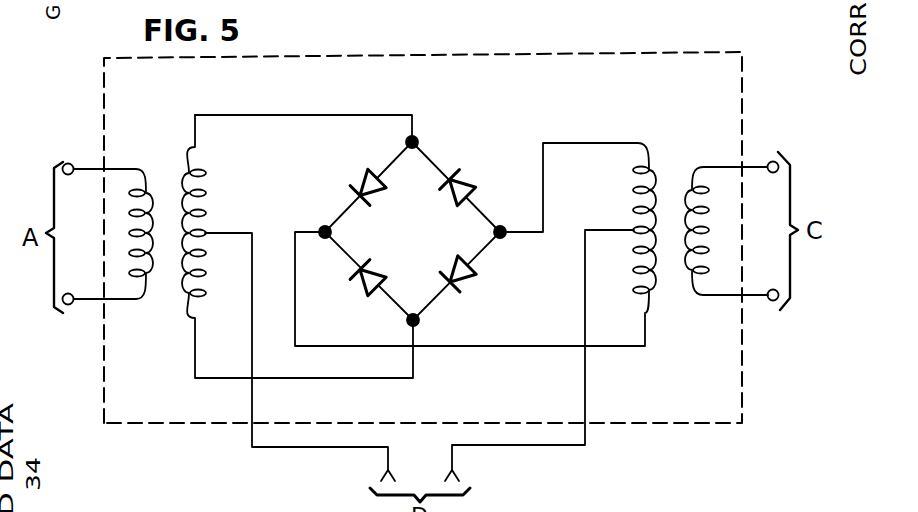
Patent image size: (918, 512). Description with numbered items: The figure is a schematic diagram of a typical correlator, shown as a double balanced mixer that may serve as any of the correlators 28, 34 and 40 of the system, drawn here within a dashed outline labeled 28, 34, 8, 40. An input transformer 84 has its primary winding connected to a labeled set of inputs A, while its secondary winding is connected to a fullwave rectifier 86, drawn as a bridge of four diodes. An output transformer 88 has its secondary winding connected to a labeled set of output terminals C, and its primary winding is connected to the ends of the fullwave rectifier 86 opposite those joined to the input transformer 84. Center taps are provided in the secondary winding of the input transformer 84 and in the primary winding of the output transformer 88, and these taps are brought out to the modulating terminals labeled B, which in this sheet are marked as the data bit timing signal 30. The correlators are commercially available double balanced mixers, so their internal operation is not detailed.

The correlator 28 is at (423, 211).
The correlator 34 is at (423, 211).
The terminal unit block 8 is at (423, 211).
The correlator 40 is at (380, 54).
The input transformer 84 is at (161, 168).
The fullwave rectifier 86 is at (360, 180).
The output transformer 88 is at (670, 163).
The data bit timing signal 30 is at (595, 500).